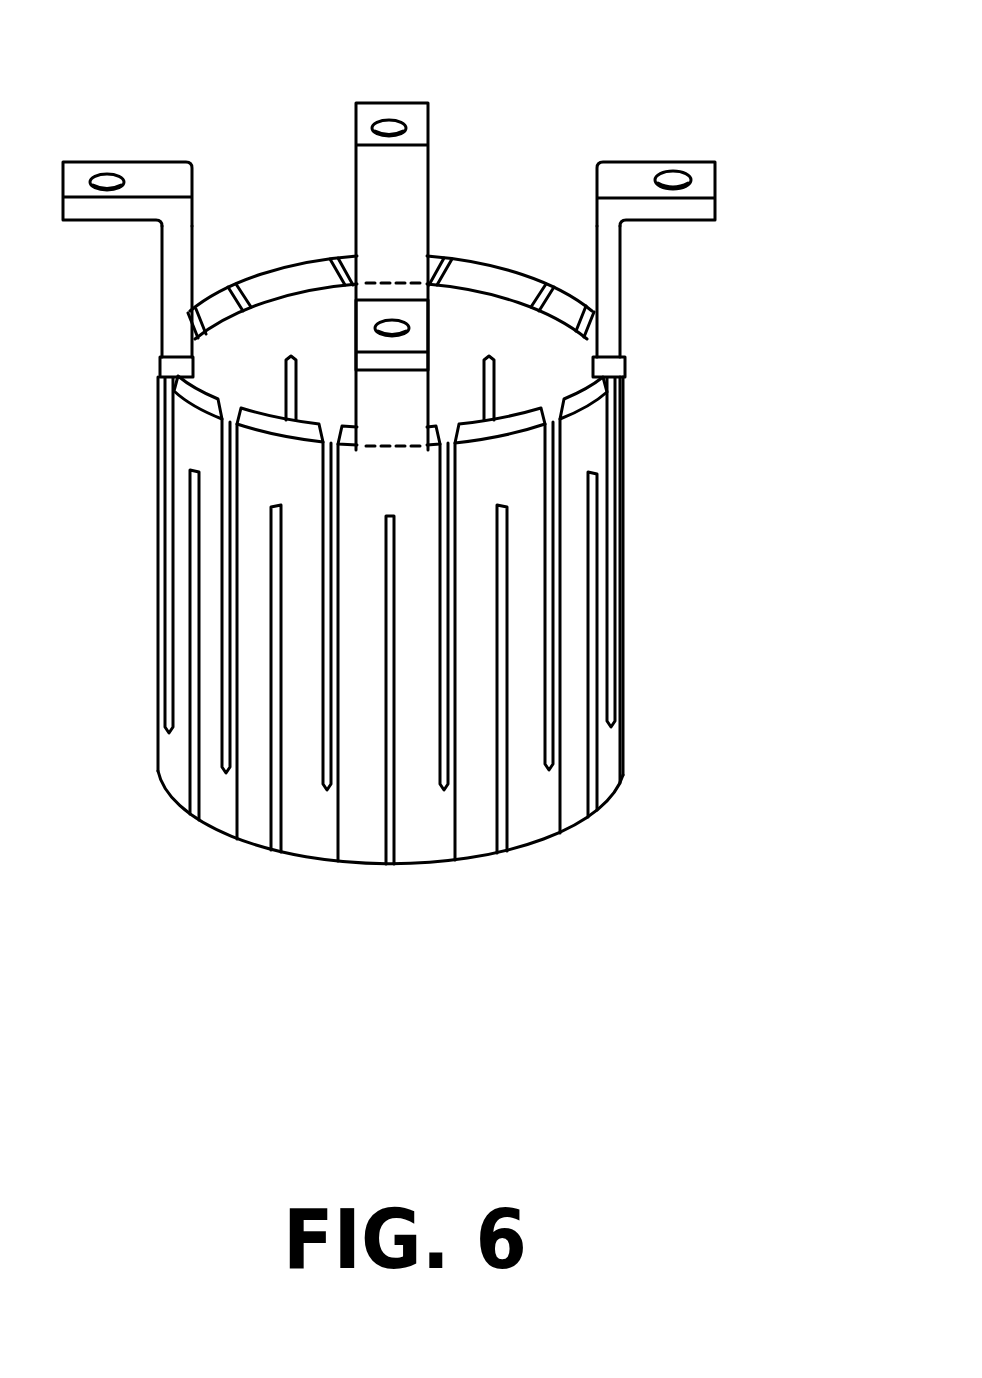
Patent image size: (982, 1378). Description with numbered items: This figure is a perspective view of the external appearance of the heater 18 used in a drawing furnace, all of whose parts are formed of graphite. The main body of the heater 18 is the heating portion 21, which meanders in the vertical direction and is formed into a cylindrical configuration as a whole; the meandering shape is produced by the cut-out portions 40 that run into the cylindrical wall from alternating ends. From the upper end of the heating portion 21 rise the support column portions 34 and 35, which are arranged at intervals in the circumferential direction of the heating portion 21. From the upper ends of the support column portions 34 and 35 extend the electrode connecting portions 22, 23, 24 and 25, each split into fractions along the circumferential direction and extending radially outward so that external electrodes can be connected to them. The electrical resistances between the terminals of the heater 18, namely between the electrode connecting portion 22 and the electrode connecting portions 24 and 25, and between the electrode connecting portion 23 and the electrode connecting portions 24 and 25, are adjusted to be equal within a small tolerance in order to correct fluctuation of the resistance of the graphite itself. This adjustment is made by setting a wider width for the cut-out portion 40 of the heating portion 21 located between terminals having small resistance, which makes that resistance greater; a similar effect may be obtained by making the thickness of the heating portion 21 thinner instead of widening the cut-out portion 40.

The heater 18 is at (662, 479).
The heating portion 21 is at (583, 733).
The electrode connecting portion 22 is at (638, 178).
The electrode connecting portion 23 is at (152, 168).
The electrode connecting portion 24 is at (420, 337).
The electrode connecting portion 25 is at (415, 112).
The support column portion 34 is at (183, 252).
The support column portion 35 is at (370, 207).
The cut-out portion 40 is at (330, 760).